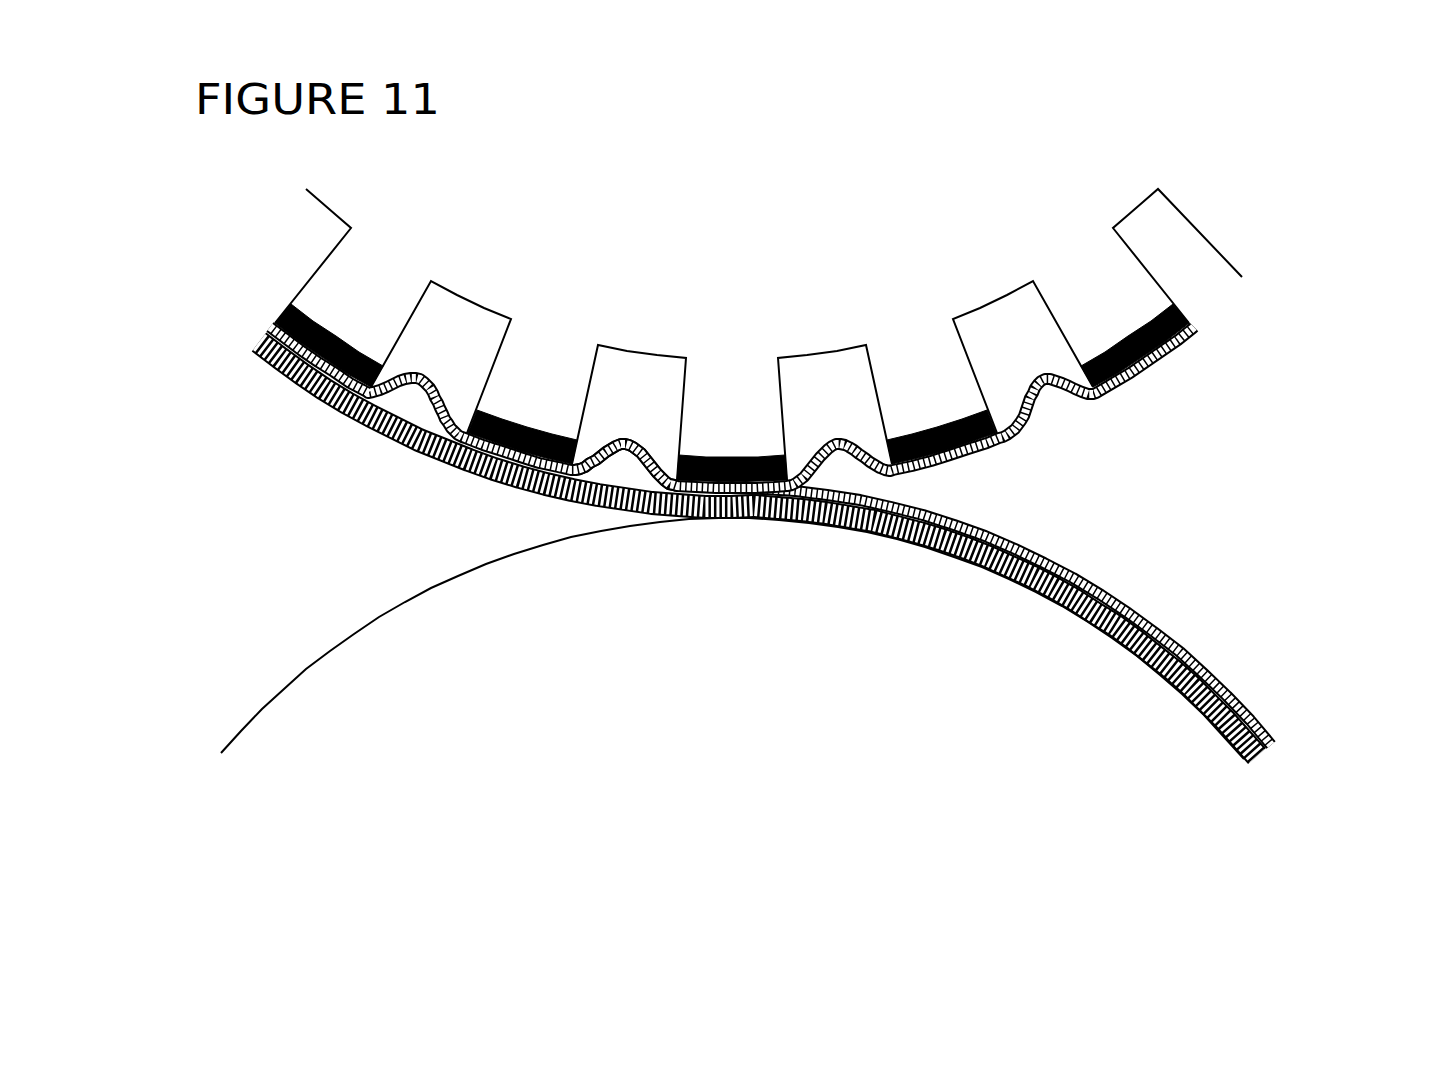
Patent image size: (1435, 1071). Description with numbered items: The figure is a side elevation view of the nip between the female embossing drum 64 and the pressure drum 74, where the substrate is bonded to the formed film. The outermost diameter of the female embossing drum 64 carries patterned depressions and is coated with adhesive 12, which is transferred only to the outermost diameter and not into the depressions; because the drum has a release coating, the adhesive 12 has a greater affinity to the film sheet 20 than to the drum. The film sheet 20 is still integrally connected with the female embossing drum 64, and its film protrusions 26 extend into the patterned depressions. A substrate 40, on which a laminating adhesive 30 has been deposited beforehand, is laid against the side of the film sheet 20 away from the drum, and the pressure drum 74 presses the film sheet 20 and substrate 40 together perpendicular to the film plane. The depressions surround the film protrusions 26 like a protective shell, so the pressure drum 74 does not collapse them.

The female embossing drum 64 is at (758, 283).
The adhesive 12 is at (829, 381).
The film sheet 20 is at (825, 407).
The film protrusions 26 is at (697, 371).
The substrate 40 is at (722, 549).
The laminating adhesive 30 is at (1078, 616).
The pressure drum 74 is at (732, 697).